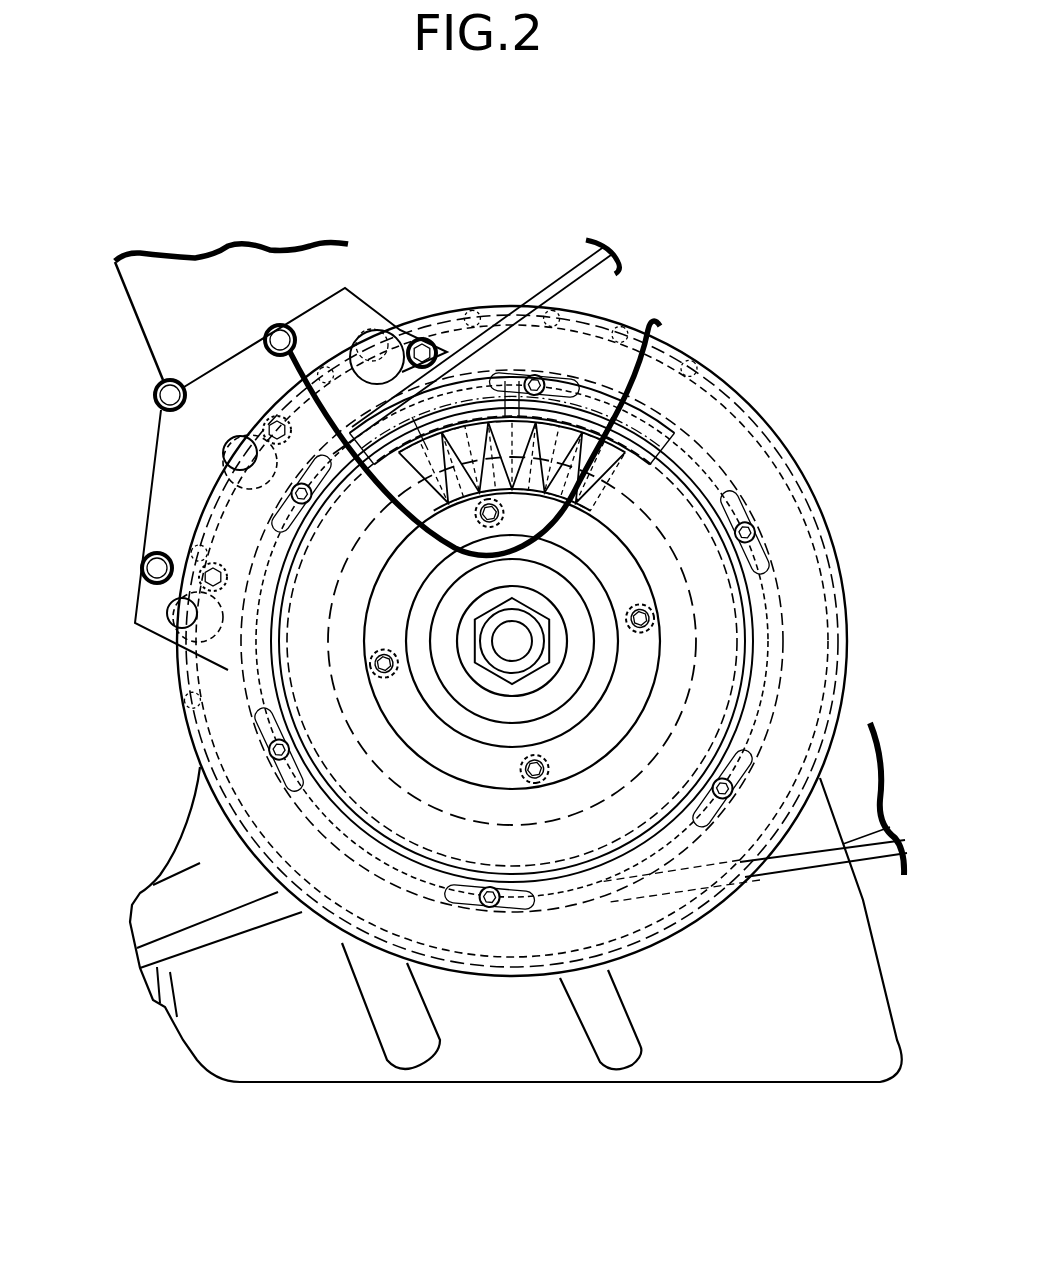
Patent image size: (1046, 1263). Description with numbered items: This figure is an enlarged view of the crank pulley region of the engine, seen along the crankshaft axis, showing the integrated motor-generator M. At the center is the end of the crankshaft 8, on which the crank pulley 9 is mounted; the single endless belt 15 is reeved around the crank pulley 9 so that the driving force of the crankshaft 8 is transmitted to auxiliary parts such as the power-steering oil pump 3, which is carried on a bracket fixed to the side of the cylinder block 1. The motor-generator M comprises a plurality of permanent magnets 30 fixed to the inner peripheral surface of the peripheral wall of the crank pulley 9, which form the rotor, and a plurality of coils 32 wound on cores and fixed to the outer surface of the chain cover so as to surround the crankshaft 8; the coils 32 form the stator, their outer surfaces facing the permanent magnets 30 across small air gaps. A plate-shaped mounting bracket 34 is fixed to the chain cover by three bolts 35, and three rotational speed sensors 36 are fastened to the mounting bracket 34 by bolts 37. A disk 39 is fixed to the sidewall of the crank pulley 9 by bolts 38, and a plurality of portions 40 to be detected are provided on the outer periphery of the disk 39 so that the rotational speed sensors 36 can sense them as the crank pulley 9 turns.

The cylinder block 1 is at (170, 303).
The power-steering oil pump 3 is at (510, 232).
The crankshaft 8 is at (525, 650).
The crank pulley 9 is at (796, 452).
The endless belt 15 is at (563, 284).
The permanent magnets 30 is at (386, 452).
The coils 32 is at (393, 493).
The mounting bracket 34 is at (153, 500).
The bolts 35 is at (280, 338).
The rotational speed sensors 36 is at (375, 350).
The bolts 37 is at (422, 340).
The bolts 38 is at (277, 760).
The disk 39 is at (815, 610).
The portions to be detected 40 is at (470, 312).
The motor-generator M is at (152, 766).